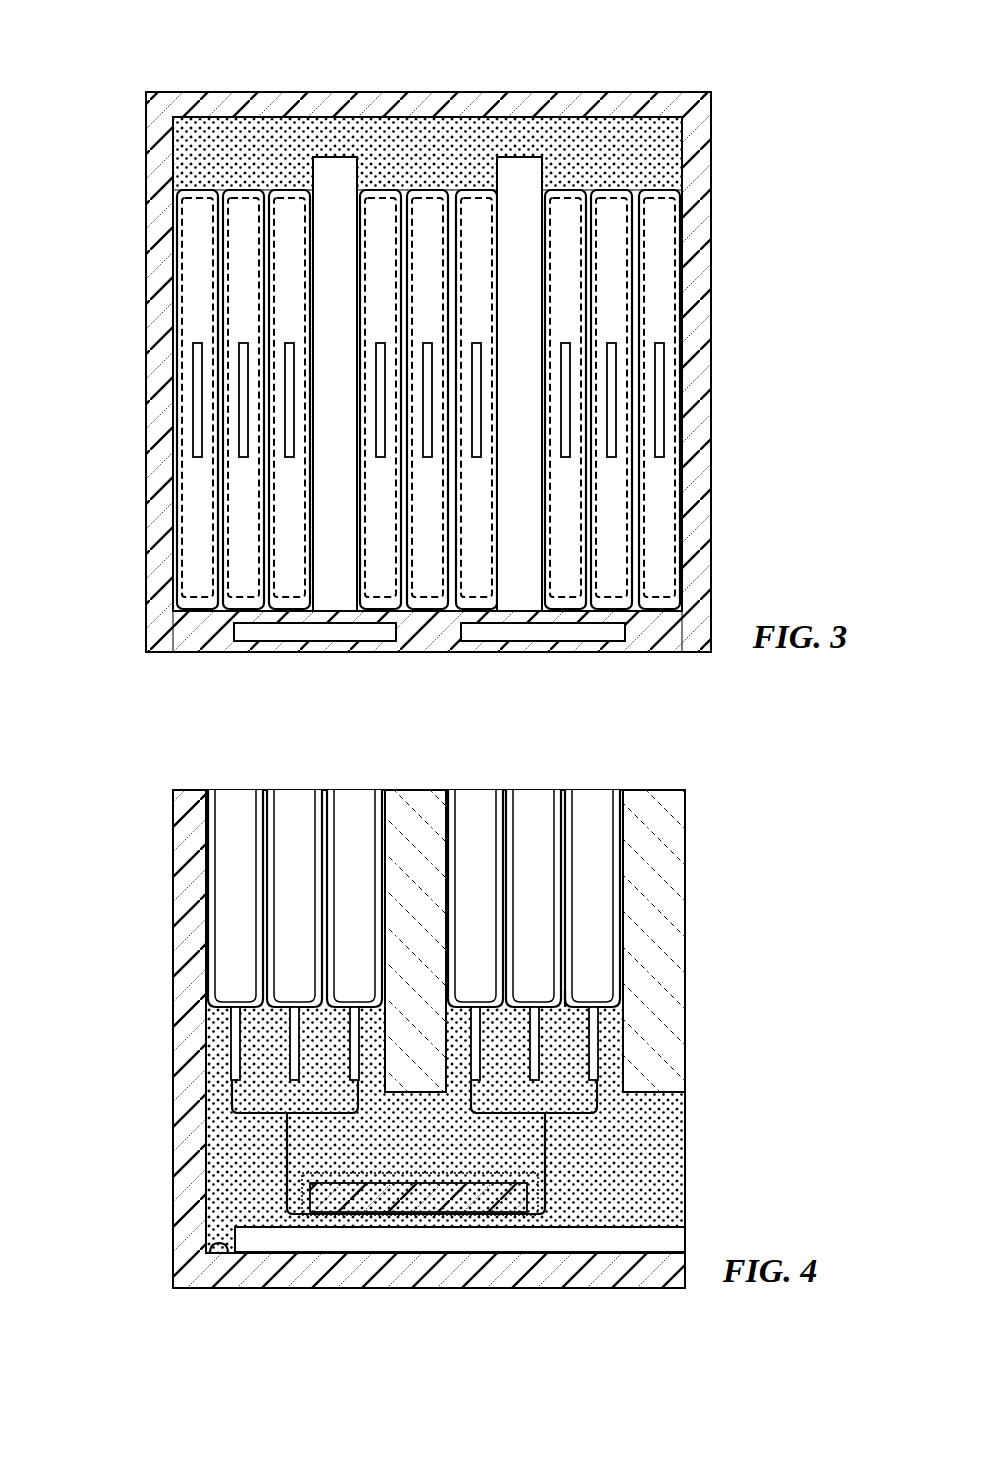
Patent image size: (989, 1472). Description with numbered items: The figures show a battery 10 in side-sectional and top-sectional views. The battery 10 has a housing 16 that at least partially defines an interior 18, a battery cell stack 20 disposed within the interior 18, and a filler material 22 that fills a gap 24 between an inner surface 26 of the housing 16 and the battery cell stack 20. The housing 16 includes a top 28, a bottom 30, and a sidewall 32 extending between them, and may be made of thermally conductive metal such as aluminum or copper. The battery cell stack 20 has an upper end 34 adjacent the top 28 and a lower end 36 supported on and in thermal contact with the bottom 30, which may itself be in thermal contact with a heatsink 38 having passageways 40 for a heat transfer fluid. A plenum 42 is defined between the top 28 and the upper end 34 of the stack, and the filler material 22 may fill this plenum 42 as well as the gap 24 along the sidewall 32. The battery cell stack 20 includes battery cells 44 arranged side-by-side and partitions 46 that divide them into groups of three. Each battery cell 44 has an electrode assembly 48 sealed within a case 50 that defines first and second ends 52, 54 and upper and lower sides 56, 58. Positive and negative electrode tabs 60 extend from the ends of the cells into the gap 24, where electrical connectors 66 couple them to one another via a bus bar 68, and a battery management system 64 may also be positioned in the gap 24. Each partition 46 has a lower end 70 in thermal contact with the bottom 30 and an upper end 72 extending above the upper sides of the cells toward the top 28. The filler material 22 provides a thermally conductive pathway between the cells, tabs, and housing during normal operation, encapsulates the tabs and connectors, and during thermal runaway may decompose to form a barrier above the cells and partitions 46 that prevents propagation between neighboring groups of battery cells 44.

In FIG. 3, the battery 10 is at (134, 90).
In FIG. 3, the housing 16 is at (150, 305).
In FIG. 4, the housing 16 is at (172, 857).
In FIG. 3, the interior 18 is at (683, 183).
In FIG. 4, the interior 18 is at (205, 1145).
In FIG. 3, the battery cell stack 20 is at (432, 177).
In FIG. 4, the battery cell stack 20 is at (530, 786).
In FIG. 3, the filler material 22 is at (672, 135).
In FIG. 4, the filler material 22 is at (597, 1200).
In FIG. 4, the gap 24 is at (652, 1199).
In FIG. 3, the inner surface 26 is at (390, 126).
In FIG. 4, the inner surface 26 is at (212, 1256).
In FIG. 3, the top 28 is at (676, 100).
In FIG. 3, the bottom 30 is at (148, 625).
In FIG. 3, the sidewall 32 is at (710, 535).
In FIG. 4, the sidewall 32 is at (322, 1290).
In FIG. 3, the upper end 34 is at (290, 176).
In FIG. 3, the lower end 36 is at (655, 617).
In FIG. 3, the heatsink 38 is at (445, 655).
In FIG. 3, the passageways 40 is at (290, 645).
In FIG. 3, the plenum 42 is at (198, 163).
In FIG. 3, the battery cells 44 is at (240, 190).
In FIG. 4, the battery cells 44 is at (205, 953).
In FIG. 3, the partitions 46 is at (424, 380).
In FIG. 4, the partitions 46 is at (432, 952).
In FIG. 3, the electrode assembly 48 is at (708, 452).
In FIG. 4, the electrode assembly 48 is at (620, 848).
In FIG. 3, the case 50 is at (612, 165).
In FIG. 4, the case 50 is at (625, 990).
In FIG. 4, the first end 52 is at (204, 1008).
In FIG. 4, the second end 54 is at (354, 898).
In FIG. 3, the upper side 56 is at (622, 182).
In FIG. 3, the lower side 58 is at (193, 617).
In FIG. 3, the positive electrode tab 60 is at (665, 393).
In FIG. 4, the positive electrode tab 60 is at (600, 1050).
In FIG. 4, the battery management system 64 is at (527, 1252).
In FIG. 4, the electrical connectors 66 is at (578, 1100).
In FIG. 4, the bus bar 68 is at (418, 1216).
In FIG. 3, the lower end 70 is at (335, 614).
In FIG. 3, the upper end 72 is at (328, 156).